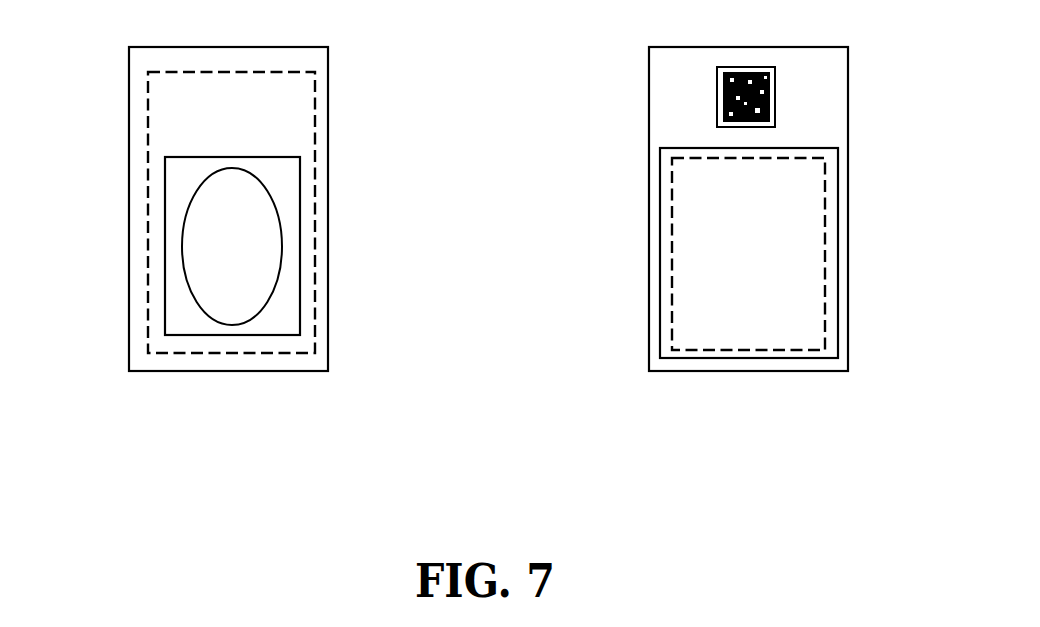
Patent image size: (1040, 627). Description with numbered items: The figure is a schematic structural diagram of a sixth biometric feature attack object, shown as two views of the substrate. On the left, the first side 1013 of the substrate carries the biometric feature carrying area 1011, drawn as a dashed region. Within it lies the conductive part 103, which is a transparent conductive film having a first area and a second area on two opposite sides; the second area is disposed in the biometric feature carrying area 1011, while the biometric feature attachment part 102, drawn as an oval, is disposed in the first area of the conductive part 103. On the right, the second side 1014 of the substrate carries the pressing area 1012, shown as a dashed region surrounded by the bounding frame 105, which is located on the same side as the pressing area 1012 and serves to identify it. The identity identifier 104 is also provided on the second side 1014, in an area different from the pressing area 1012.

The biometric feature carrying area 1011 is at (148, 147).
The pressing area 1012 is at (825, 210).
The first side 1013 is at (208, 372).
The second side 1014 is at (718, 372).
The biometric feature attachment part 102 is at (283, 245).
The conductive part 103 is at (165, 304).
The identity identifier 104 is at (775, 97).
The bounding frame 105 is at (838, 300).